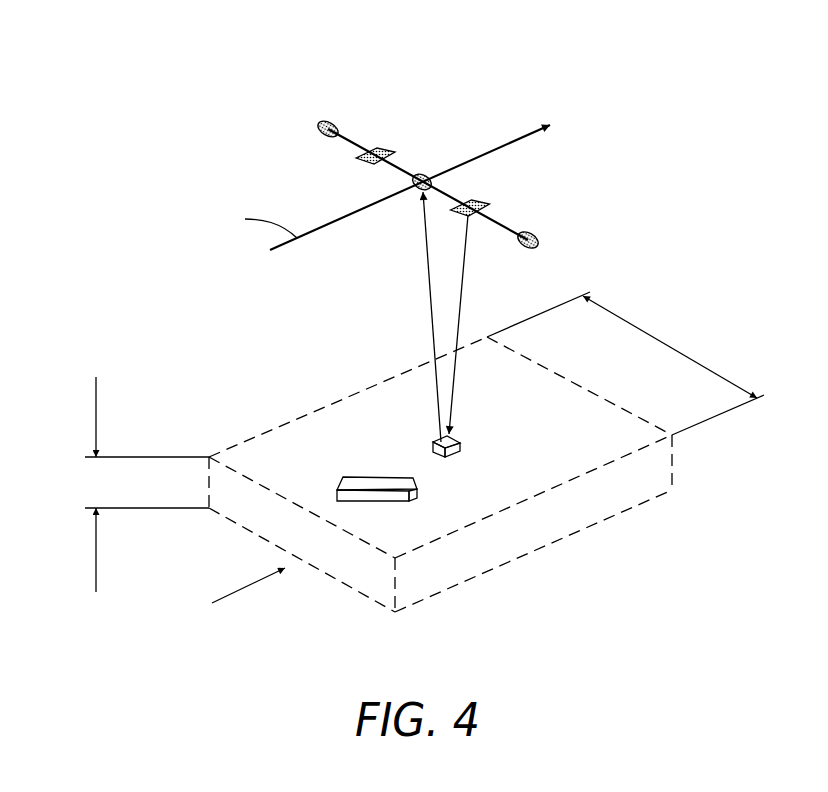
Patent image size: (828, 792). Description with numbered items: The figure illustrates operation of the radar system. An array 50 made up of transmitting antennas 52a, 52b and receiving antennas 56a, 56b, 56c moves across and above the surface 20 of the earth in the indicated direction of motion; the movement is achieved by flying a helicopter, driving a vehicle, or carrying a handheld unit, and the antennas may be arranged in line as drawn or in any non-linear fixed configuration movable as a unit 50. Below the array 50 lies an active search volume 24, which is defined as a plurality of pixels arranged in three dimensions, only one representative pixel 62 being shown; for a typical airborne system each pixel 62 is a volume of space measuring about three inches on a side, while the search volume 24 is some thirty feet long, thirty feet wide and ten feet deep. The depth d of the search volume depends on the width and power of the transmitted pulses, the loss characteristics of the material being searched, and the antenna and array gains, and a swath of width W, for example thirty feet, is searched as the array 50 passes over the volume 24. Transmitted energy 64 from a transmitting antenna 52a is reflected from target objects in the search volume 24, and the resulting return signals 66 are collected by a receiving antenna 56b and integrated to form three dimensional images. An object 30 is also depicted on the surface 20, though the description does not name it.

The array 50 is at (583, 108).
The surface 20 is at (395, 438).
The active search volume 24 is at (228, 598).
The buried object 30 is at (389, 503).
The pixel 62 is at (455, 455).
The transmitted energy 64 is at (463, 287).
The return signals 66 is at (431, 297).
The transmitting antenna 52a is at (483, 203).
The transmitting antenna 52b is at (358, 162).
The receiving antenna 56a is at (540, 236).
The receiving antenna 56b is at (423, 173).
The receiving antenna 56c is at (318, 123).
The depth d is at (97, 406).
The width W is at (673, 348).